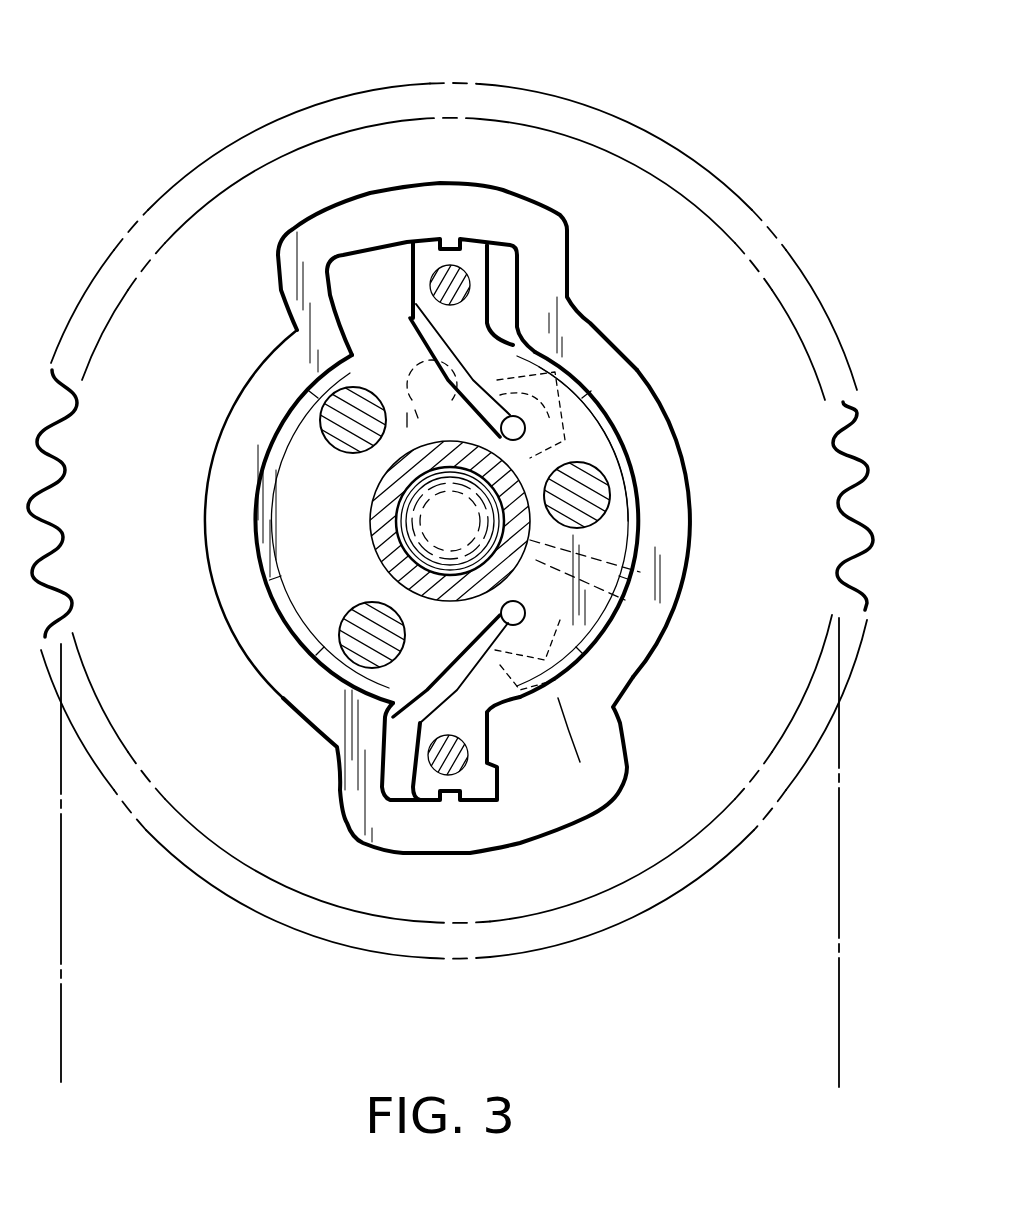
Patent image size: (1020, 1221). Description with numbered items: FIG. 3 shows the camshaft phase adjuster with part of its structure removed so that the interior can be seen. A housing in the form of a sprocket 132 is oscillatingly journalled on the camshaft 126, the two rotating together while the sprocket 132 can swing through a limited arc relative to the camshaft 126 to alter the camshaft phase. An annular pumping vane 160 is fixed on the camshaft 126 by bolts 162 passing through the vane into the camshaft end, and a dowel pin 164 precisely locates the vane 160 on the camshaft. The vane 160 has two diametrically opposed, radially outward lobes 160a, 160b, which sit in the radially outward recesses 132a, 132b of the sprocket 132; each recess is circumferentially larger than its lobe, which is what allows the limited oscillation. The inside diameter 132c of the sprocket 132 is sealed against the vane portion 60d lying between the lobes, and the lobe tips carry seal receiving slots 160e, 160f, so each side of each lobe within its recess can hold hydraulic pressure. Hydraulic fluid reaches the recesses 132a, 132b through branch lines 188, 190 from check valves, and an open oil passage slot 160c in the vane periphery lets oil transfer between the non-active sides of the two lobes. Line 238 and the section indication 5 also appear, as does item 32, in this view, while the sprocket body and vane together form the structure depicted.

The housing body 32 is at (303, 396).
The camshaft 126 is at (372, 504).
The sprocket 132 is at (787, 417).
The recess 132a is at (507, 287).
The recess 132b is at (540, 767).
The inside diameter 132c is at (302, 630).
The pumping vane 160 is at (612, 546).
The lobe 160a is at (485, 247).
The lobe 160b is at (500, 800).
The oil passage slot 160c is at (637, 520).
The seal receiving slot 160e is at (452, 238).
The seal receiving slot 160f is at (453, 803).
The bolts 162 is at (333, 445).
The dowel pin 164 is at (451, 513).
The branch line 188 is at (518, 415).
The branch line 190 is at (420, 723).
The drum portion 60d is at (272, 600).
The center lines 238 is at (838, 978).
The section line 5- 5 is at (577, 419).